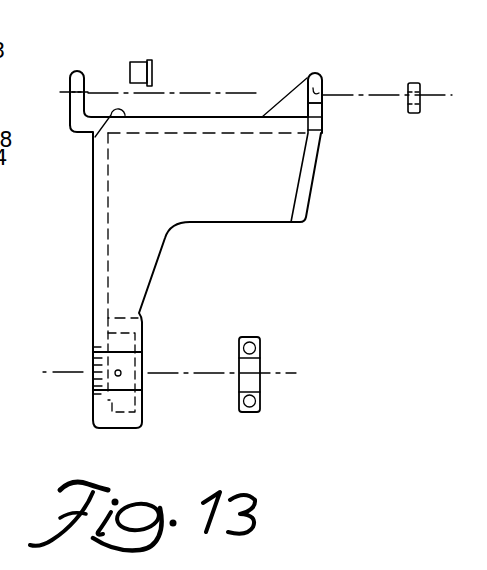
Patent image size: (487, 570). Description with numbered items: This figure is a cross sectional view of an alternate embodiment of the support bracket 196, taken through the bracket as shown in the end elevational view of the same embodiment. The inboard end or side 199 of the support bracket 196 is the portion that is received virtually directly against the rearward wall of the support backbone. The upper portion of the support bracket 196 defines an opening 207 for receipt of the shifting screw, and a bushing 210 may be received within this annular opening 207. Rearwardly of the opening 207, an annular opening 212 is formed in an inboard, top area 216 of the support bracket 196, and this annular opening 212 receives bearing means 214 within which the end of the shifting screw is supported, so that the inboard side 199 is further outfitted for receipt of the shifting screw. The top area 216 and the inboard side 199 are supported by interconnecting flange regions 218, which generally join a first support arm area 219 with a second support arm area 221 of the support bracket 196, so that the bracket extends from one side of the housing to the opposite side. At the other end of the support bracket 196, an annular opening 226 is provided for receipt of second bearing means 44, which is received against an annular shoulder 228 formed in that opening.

The second bearing means 44 is at (258, 344).
The support bracket 196 is at (66, 238).
The inboard end or side 199 is at (315, 168).
The opening 207 is at (68, 95).
The bushing 210 is at (141, 60).
The annular opening 212 is at (322, 92).
The bearing means 214 is at (414, 83).
The inboard top area 216 is at (322, 118).
The interconnecting flange regions 218 is at (220, 191).
The first support arm area 219 is at (94, 140).
The second support arm area 221 is at (93, 306).
The annular opening 226 is at (133, 406).
The annular shoulder 228 is at (143, 343).